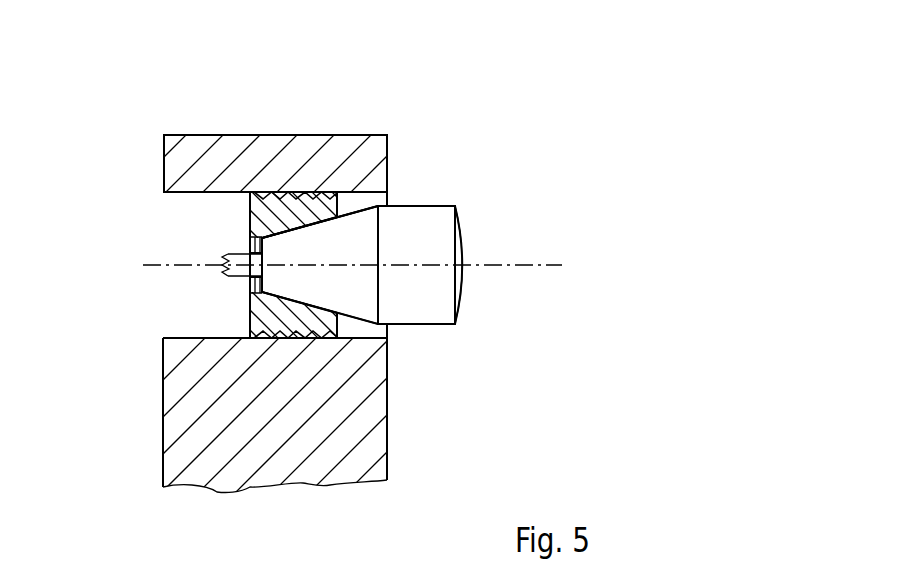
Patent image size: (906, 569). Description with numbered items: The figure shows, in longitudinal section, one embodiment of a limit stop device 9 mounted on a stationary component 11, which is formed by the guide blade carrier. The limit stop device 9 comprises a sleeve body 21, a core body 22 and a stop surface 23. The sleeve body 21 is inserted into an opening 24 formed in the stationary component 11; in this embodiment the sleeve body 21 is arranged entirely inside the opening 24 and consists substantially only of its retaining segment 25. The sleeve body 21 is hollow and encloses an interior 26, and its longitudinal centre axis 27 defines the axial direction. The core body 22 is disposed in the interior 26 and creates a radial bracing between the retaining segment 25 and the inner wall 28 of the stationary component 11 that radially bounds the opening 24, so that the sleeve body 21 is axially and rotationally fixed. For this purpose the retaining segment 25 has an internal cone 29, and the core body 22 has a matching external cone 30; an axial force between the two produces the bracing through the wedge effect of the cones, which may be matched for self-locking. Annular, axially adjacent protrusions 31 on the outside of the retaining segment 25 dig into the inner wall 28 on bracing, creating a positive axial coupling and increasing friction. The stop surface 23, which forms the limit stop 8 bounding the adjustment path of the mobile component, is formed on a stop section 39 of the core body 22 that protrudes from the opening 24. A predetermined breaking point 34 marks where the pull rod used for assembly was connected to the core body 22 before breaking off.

The limit stop 8 is at (463, 250).
The limit stop device 9 is at (512, 124).
The stationary component 11 is at (253, 122).
The sleeve body 21 is at (236, 232).
The core body 22 is at (414, 192).
The stop surface 23 is at (470, 280).
The opening 24 is at (187, 323).
The retaining segment 25 is at (253, 341).
The interior 26 is at (250, 283).
The longitudinal centre axis 27 is at (526, 264).
The inner wall 28 is at (187, 194).
The internal cone 29 is at (315, 214).
The external cone 30 is at (298, 233).
The protrusion 31 is at (307, 338).
The predetermined breaking point 34 is at (223, 270).
The stop section 39 is at (430, 222).